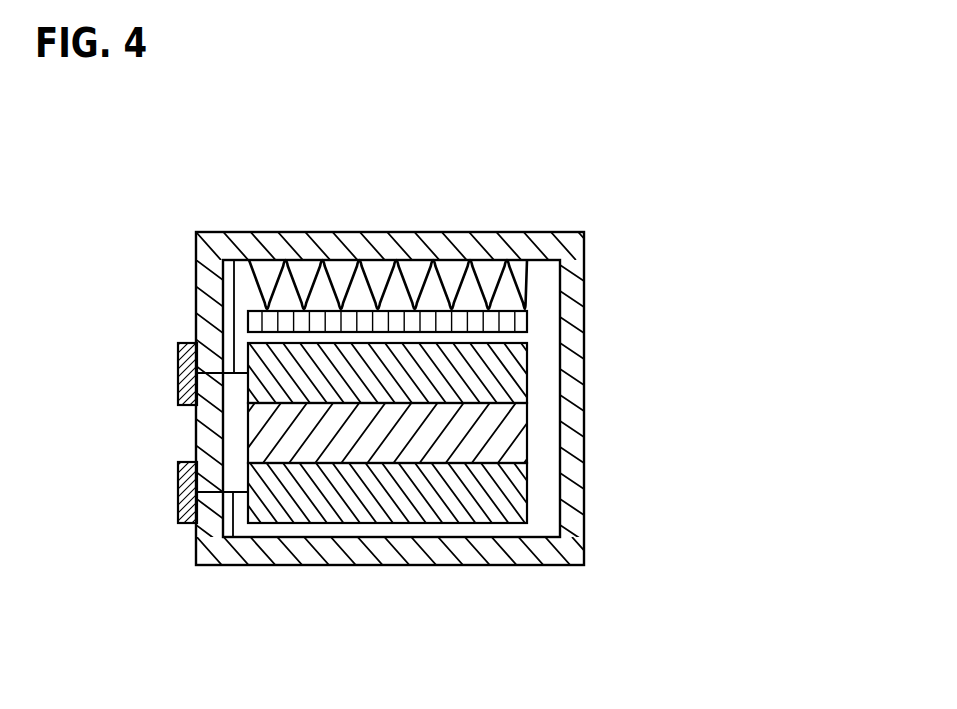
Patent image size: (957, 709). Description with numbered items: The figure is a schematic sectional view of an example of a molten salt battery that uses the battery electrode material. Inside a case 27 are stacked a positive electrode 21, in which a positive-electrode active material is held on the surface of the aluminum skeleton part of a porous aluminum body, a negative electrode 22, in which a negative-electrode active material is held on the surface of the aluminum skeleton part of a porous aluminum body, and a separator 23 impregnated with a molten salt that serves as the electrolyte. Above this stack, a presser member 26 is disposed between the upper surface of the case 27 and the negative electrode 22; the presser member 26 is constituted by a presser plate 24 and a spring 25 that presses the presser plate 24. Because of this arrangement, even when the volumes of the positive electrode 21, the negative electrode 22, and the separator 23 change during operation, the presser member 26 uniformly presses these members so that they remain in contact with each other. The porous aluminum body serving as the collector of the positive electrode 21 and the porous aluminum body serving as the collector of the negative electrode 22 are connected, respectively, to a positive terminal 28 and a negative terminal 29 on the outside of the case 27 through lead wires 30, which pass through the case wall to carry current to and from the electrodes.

The positive electrode 21 is at (485, 498).
The negative electrode 22 is at (487, 387).
The separator 23 is at (483, 450).
The presser plate 24 is at (528, 318).
The spring 25 is at (520, 268).
The presser member 26 is at (767, 257).
The case 27 is at (535, 550).
The positive terminal 28 is at (178, 494).
The negative terminal 29 is at (178, 378).
The lead wires 30 is at (239, 373).